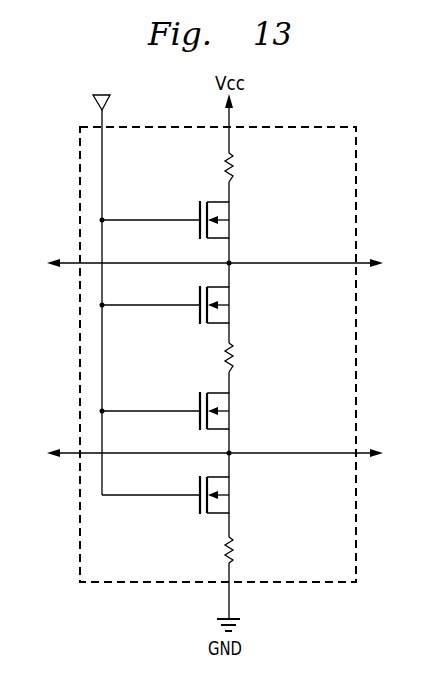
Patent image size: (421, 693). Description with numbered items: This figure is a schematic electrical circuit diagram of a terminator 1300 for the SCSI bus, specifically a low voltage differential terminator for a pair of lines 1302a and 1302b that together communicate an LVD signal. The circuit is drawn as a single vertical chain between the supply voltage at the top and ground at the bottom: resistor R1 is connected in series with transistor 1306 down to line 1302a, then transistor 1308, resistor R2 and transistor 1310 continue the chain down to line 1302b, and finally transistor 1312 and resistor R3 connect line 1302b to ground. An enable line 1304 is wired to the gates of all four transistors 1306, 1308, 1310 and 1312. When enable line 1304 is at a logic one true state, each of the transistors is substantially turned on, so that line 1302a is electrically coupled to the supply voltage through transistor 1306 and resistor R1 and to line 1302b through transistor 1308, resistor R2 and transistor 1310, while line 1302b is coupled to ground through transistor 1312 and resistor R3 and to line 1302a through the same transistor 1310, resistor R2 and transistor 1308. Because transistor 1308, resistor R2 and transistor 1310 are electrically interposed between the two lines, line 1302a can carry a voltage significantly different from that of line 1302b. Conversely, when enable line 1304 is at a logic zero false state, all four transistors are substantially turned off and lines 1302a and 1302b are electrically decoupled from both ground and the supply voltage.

The terminator 1300 is at (303, 122).
The enable line 1304 is at (92, 97).
The transistor 1306 is at (200, 211).
The transistor 1308 is at (200, 315).
The transistor 1310 is at (200, 402).
The transistor 1312 is at (200, 505).
The line 1302a is at (292, 265).
The line 1302b is at (290, 455).
The resistor R1 is at (216, 167).
The resistor R2 is at (215, 357).
The resistor R3 is at (214, 550).